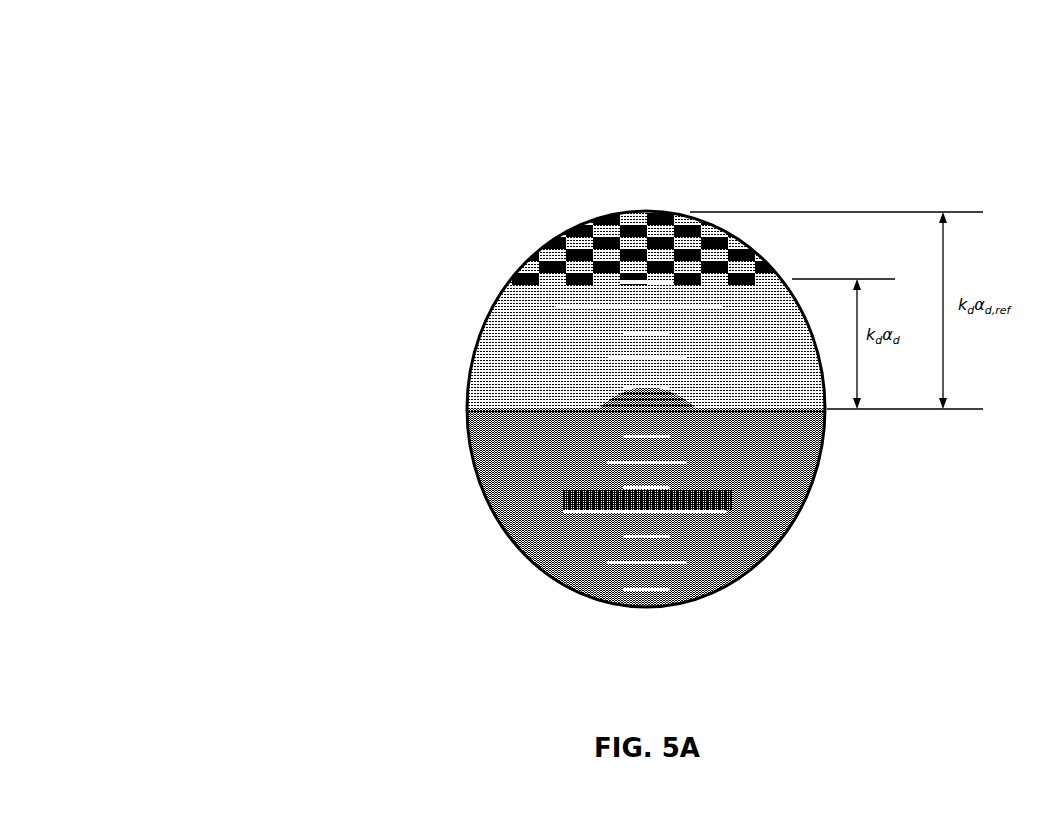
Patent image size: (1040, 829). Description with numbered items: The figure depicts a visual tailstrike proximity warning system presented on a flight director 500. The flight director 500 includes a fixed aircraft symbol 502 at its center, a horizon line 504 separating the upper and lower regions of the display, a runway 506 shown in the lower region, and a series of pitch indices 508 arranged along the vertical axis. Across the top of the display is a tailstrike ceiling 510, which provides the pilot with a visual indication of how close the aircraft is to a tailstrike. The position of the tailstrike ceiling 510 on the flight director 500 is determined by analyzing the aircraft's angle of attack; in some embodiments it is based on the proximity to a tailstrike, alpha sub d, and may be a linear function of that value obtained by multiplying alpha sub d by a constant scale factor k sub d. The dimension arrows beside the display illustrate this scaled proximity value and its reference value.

The flight director 500 is at (272, 101).
The fixed aircraft symbol 502 is at (598, 408).
The horizon line 504 is at (487, 407).
The runway 506 is at (730, 495).
The pitch indices 508 is at (648, 538).
The tailstrike ceiling 510 is at (537, 267).